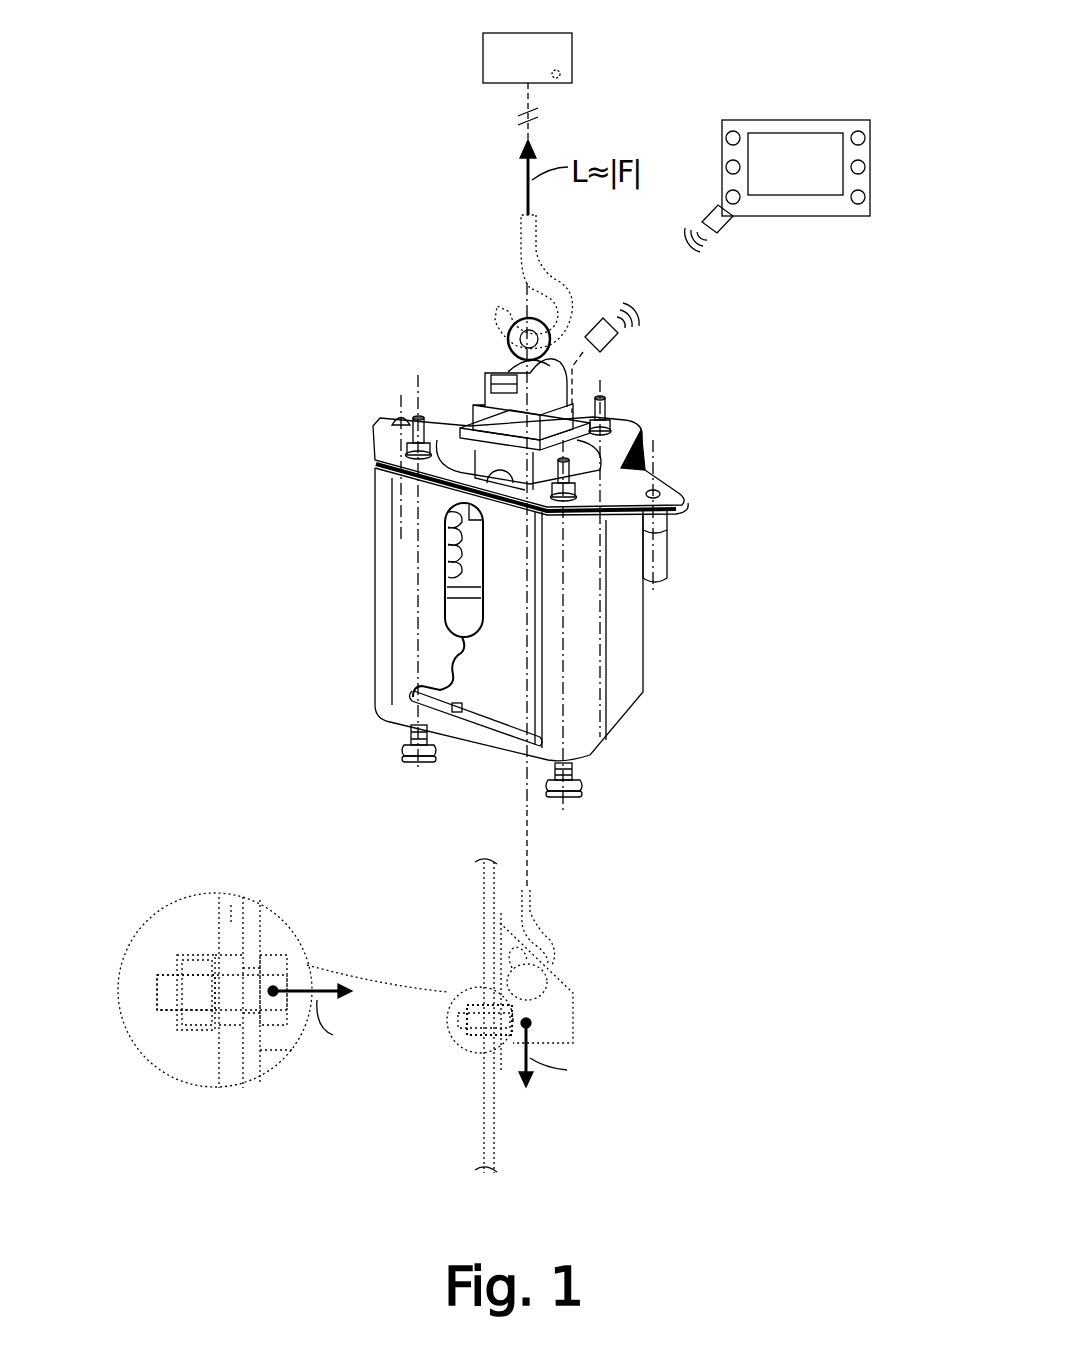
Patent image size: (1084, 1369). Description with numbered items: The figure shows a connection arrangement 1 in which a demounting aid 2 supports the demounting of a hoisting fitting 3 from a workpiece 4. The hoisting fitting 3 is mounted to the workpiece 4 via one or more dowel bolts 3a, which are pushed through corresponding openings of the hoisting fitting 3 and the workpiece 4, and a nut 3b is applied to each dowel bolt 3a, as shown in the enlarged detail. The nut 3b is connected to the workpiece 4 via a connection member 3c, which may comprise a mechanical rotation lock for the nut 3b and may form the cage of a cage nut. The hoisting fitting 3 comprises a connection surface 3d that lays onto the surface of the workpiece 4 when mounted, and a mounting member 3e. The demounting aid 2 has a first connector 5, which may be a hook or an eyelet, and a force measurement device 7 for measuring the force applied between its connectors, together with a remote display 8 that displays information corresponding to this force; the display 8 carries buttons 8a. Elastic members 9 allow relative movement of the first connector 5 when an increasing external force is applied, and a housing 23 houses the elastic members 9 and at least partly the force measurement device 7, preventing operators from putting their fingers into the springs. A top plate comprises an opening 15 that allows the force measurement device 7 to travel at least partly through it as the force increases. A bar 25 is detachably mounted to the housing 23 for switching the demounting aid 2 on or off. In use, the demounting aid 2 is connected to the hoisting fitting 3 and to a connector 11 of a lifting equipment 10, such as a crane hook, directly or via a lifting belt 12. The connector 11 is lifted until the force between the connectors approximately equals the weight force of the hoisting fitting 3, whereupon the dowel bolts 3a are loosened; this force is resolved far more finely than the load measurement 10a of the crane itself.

The connection arrangement 1 is at (465, 205).
The demounting aid 2 is at (700, 534).
The hoisting fitting 3 is at (500, 1085).
The dowel bolt 3a is at (510, 1017).
The nut 3b is at (190, 967).
The connection member 3c is at (203, 955).
The connection surface 3d is at (237, 910).
The mounting member 3e is at (543, 968).
The workpiece 4 is at (485, 1103).
The first connector 5 is at (513, 322).
The force measurement device 7 is at (430, 348).
The remote display 8 is at (804, 110).
The control buttons 8a is at (858, 195).
The elastic member 9 is at (462, 552).
The lifting equipment 10 is at (567, 50).
The load measurement 10a is at (560, 75).
The connector 11 is at (540, 252).
The lifting belt 12 is at (527, 857).
The opening 15 is at (462, 442).
The housing 23 is at (620, 647).
The bar 25 is at (502, 718).